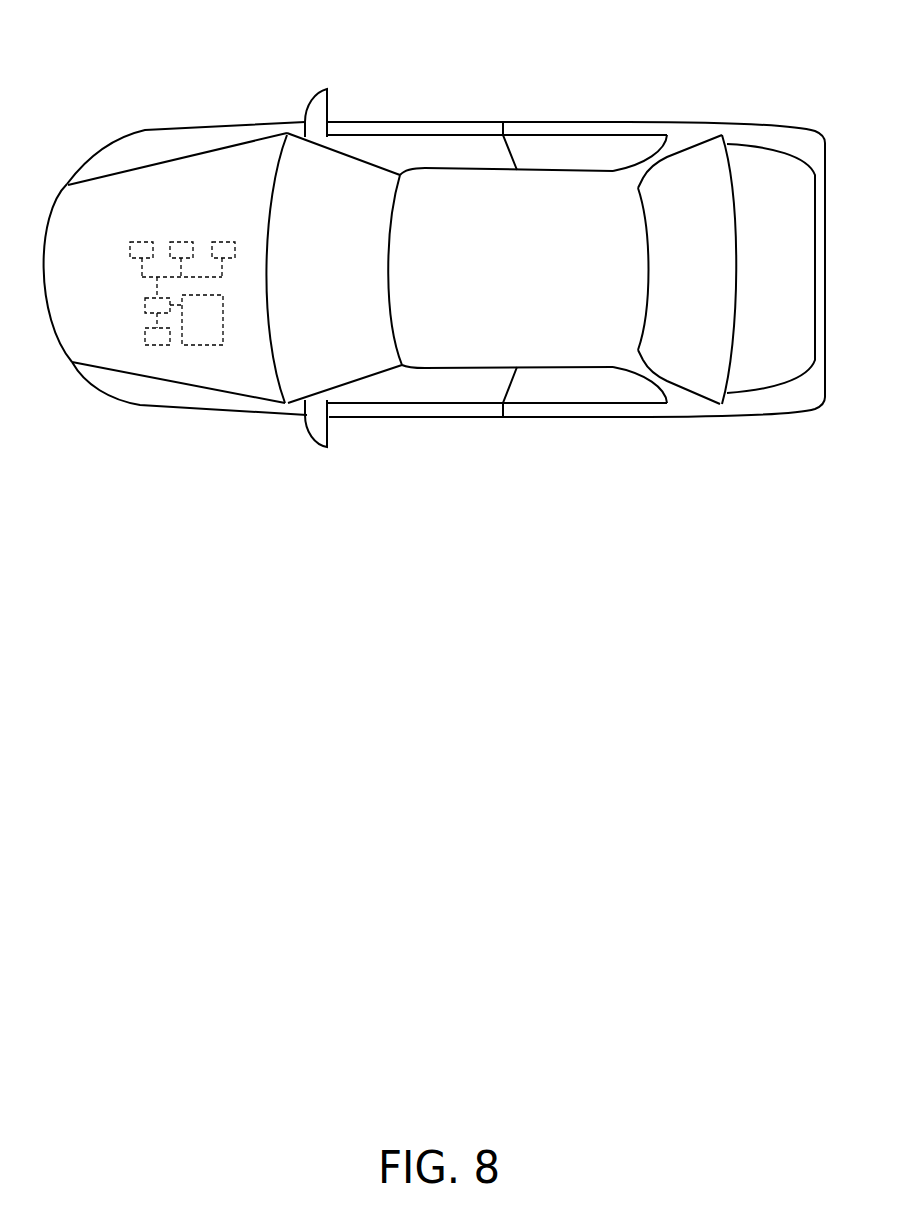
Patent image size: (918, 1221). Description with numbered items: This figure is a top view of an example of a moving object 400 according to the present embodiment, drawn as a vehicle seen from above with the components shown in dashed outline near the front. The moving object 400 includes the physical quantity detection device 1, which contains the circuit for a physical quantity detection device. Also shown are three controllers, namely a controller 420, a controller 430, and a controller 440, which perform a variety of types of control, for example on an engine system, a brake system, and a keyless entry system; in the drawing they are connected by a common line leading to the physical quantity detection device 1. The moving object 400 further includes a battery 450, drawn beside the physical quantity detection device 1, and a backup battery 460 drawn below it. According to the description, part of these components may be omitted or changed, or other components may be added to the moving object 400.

The moving object 400 is at (456, 50).
The controller 420 is at (141, 242).
The controller 430 is at (181, 242).
The controller 440 is at (224, 242).
The physical quantity detection device 1 is at (145, 305).
The battery 450 is at (212, 346).
The backup battery 460 is at (145, 337).